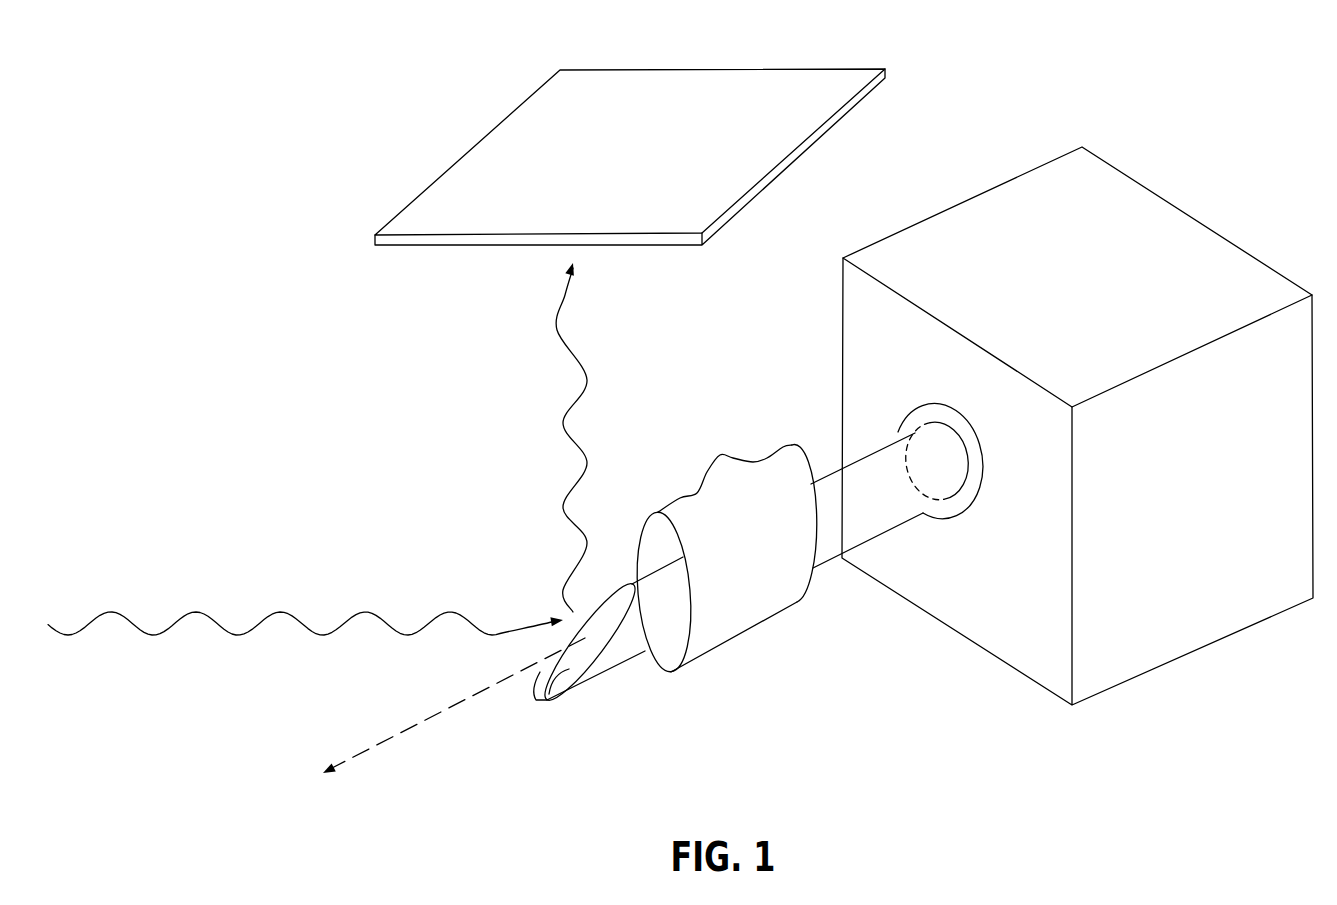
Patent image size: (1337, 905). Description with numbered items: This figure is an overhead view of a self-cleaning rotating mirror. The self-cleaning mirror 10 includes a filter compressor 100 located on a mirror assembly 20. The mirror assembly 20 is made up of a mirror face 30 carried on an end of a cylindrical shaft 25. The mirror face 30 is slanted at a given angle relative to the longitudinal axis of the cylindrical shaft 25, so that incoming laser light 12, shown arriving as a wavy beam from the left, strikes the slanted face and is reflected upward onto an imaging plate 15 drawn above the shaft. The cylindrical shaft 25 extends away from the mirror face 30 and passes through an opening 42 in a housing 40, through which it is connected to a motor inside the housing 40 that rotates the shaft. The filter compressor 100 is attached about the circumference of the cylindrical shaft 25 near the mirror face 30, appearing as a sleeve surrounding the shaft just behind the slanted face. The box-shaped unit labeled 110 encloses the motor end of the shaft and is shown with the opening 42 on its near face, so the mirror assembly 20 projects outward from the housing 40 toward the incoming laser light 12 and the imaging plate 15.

The self-cleaning mirror 10 is at (680, 395).
The incoming laser light 12 is at (370, 610).
The imaging plate 15 is at (718, 83).
The mirror assembly 20 is at (723, 579).
The cylindrical shaft 25 is at (630, 643).
The mirror face 30 is at (548, 703).
The housing 40 is at (1137, 655).
The opening 42 is at (957, 505).
The filter compressor 100 is at (723, 472).
The detector unit 110 is at (1077, 405).